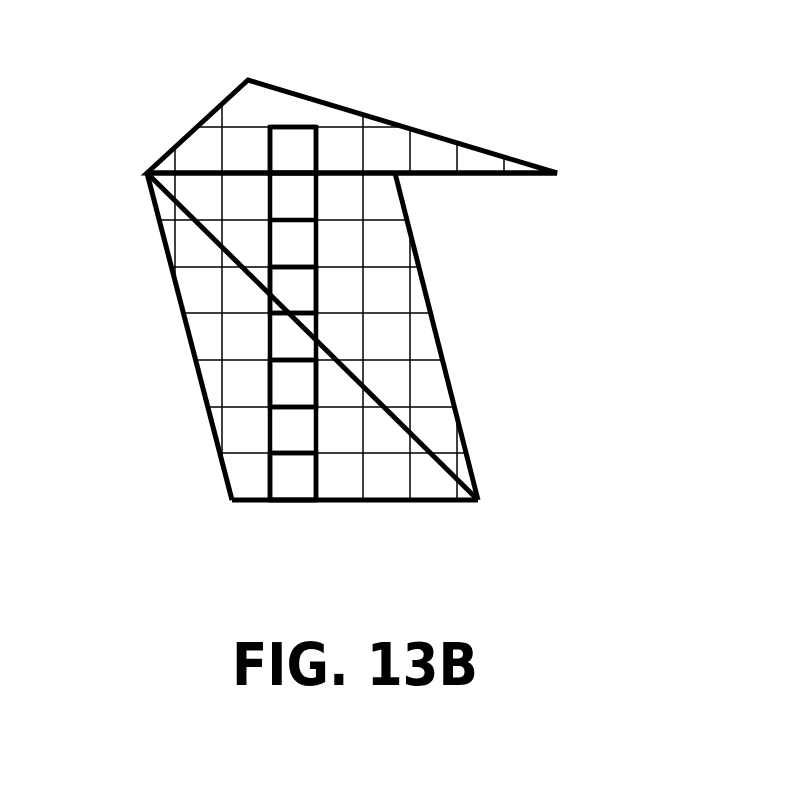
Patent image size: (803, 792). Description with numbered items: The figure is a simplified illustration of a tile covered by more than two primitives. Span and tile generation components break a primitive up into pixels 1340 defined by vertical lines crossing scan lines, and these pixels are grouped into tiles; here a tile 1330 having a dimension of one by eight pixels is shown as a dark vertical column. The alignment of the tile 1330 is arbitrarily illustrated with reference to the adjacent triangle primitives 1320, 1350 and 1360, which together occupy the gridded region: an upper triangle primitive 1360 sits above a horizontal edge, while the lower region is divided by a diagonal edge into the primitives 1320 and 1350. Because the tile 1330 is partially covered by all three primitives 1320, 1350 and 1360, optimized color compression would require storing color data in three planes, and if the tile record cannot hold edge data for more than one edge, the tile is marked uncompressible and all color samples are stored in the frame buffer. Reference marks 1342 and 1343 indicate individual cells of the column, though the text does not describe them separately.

The triangle primitive 1320 is at (177, 308).
The tile 1330 is at (293, 148).
The pixel 1340 is at (297, 485).
The intermediate cell of central column 1342 is at (287, 288).
The intermediate cell of central column 1343 is at (298, 387).
The triangle primitive 1350 is at (442, 350).
The triangle primitive 1360 is at (482, 152).